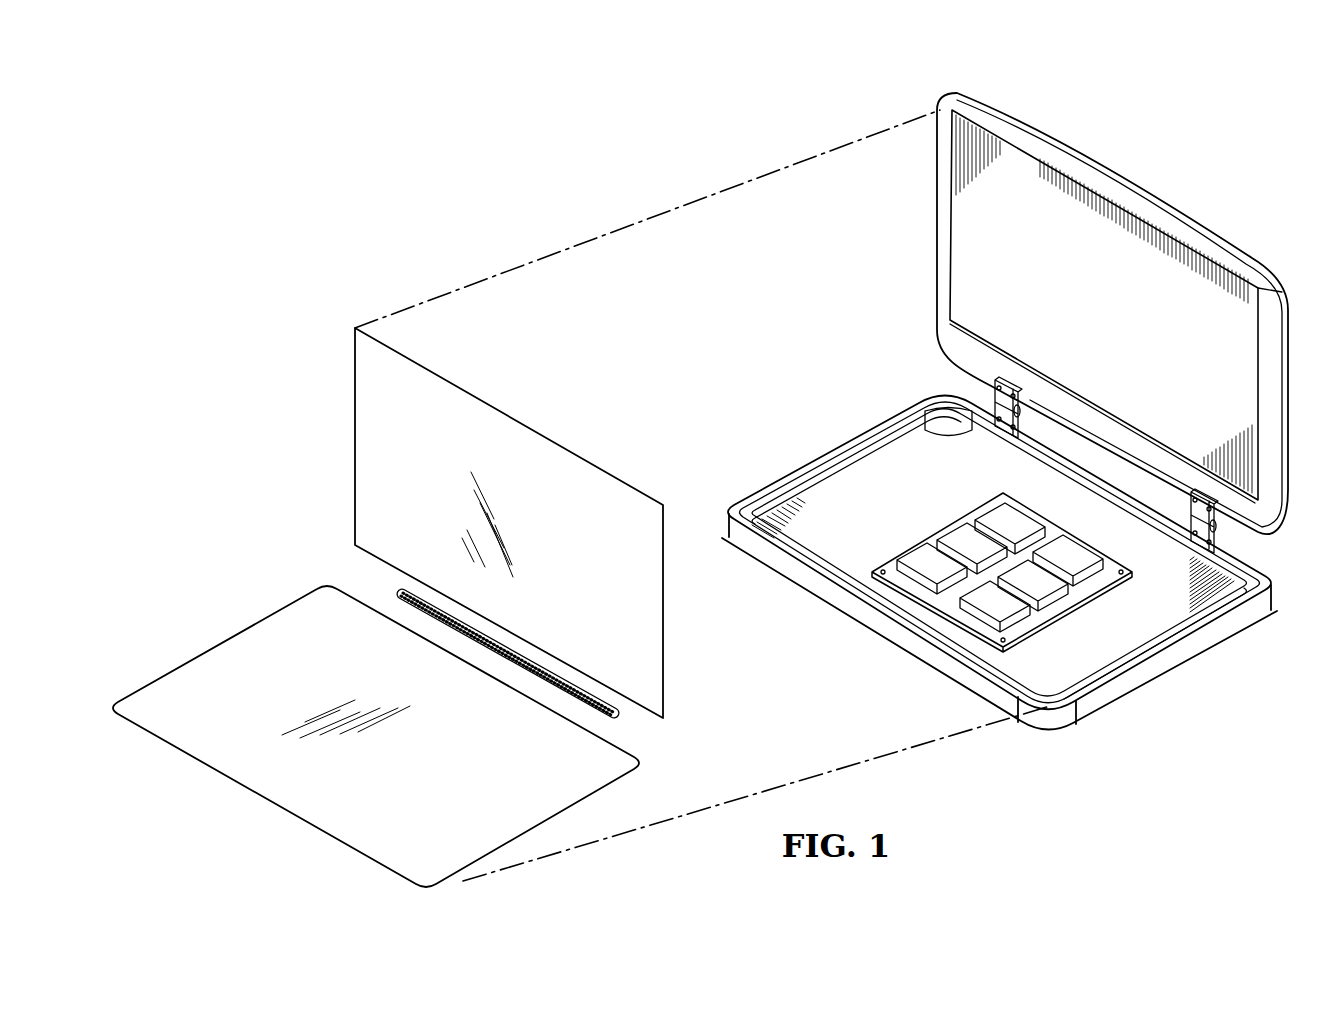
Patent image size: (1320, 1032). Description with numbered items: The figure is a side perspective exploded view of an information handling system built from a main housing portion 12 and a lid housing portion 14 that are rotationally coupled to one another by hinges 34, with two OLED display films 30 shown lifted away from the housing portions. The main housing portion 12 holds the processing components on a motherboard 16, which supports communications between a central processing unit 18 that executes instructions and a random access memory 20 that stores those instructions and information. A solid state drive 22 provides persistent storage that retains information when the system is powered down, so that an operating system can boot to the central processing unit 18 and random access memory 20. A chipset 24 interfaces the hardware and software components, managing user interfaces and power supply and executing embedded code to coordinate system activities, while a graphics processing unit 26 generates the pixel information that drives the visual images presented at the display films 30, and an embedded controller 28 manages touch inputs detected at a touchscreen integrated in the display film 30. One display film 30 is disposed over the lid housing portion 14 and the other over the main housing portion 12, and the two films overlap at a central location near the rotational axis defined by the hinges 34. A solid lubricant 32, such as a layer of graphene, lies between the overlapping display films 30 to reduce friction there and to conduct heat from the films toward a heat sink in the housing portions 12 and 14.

The main housing portion 12 is at (1164, 672).
The lid housing portion 14 is at (1122, 177).
The motherboard 16 is at (887, 554).
The central processing unit 18 is at (993, 513).
The random access memory 20 is at (957, 532).
The solid state drive 22 is at (928, 570).
The chipset 24 is at (1076, 555).
The graphics processing unit 26 is at (1045, 590).
The embedded controller 28 is at (988, 604).
The OLED display film 30 is at (242, 640).
The solid lubricant 32 is at (534, 676).
The hinge 34 is at (1192, 496).